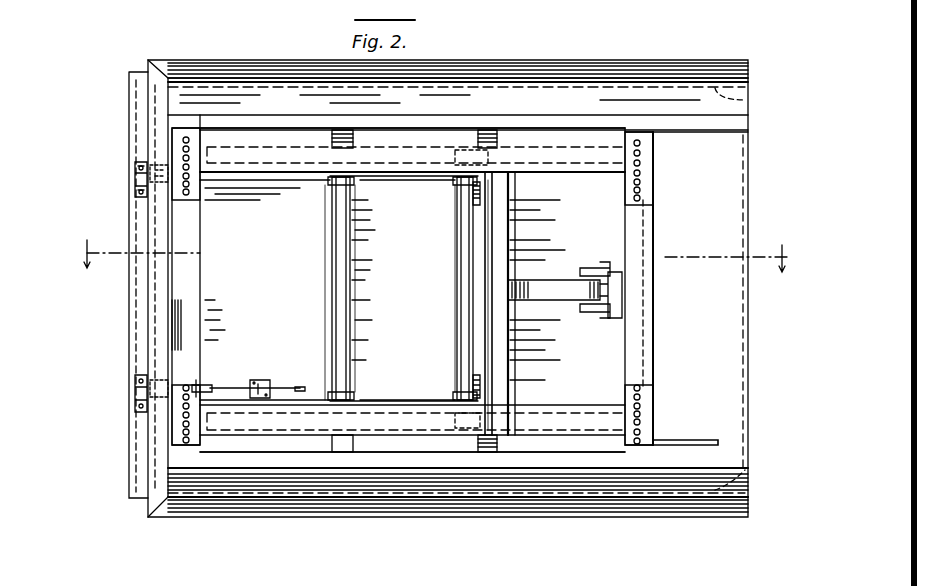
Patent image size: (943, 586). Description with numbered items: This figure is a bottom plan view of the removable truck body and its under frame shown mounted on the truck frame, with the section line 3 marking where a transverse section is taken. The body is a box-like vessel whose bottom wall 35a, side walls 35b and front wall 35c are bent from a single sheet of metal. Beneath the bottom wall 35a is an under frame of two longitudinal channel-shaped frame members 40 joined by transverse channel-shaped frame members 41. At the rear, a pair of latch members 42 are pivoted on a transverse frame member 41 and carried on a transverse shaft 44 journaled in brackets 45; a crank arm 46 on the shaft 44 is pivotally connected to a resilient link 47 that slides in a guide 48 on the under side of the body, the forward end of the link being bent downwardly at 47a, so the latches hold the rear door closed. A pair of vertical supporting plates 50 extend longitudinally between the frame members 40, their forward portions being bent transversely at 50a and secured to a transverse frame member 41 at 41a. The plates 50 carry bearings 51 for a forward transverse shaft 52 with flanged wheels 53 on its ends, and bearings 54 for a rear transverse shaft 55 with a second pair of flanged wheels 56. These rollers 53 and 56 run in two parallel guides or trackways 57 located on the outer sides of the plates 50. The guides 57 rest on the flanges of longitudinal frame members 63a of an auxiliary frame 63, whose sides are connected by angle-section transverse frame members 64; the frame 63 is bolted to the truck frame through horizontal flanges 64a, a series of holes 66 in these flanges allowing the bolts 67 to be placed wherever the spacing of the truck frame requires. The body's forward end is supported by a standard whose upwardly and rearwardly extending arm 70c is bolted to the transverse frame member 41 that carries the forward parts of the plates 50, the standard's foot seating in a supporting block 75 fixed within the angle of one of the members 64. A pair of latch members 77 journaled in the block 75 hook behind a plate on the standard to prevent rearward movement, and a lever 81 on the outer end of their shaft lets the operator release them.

The section line 3- 3 is at (430, 256).
The bottom wall 35a is at (762, 410).
The side walls 35b is at (748, 98).
The front wall 35c is at (742, 168).
The longitudinal channel-shaped frame members 40 is at (580, 122).
The transverse channel-shaped frame members 41 is at (352, 296).
The attachment of bent portions of supporting plates 41a is at (470, 378).
The latch members 42 is at (140, 182).
The transverse shaft 44 is at (160, 325).
The brackets 45 is at (150, 150).
The crank arm 46 is at (196, 384).
The link 47 is at (245, 386).
The downwardly bent forward portion of link 47a is at (303, 382).
The guide 48 is at (268, 382).
The supporting plates 50 is at (432, 176).
The transversely bent forward portions of supporting plates 50a is at (510, 188).
The bearings 51 is at (466, 186).
The transverse shaft 52 is at (466, 262).
The flanged wheels 53 is at (465, 150).
The bearings 54 is at (330, 186).
The transverse shaft 55 is at (336, 232).
The flanged wheels 56 is at (312, 172).
The guides or trackways 57 is at (290, 147).
The auxiliary frame 63 is at (535, 140).
The longitudinal frame members 63a is at (400, 148).
The transverse frame members 64 is at (204, 292).
The horizontal flanges 64a is at (675, 333).
The holes 66 is at (190, 186).
The bolts 67 is at (186, 140).
The upwardly and rearwardly extending arm 70c is at (548, 303).
The supporting block 75 is at (615, 292).
The latch members 77 is at (592, 268).
The lever 81 is at (718, 443).